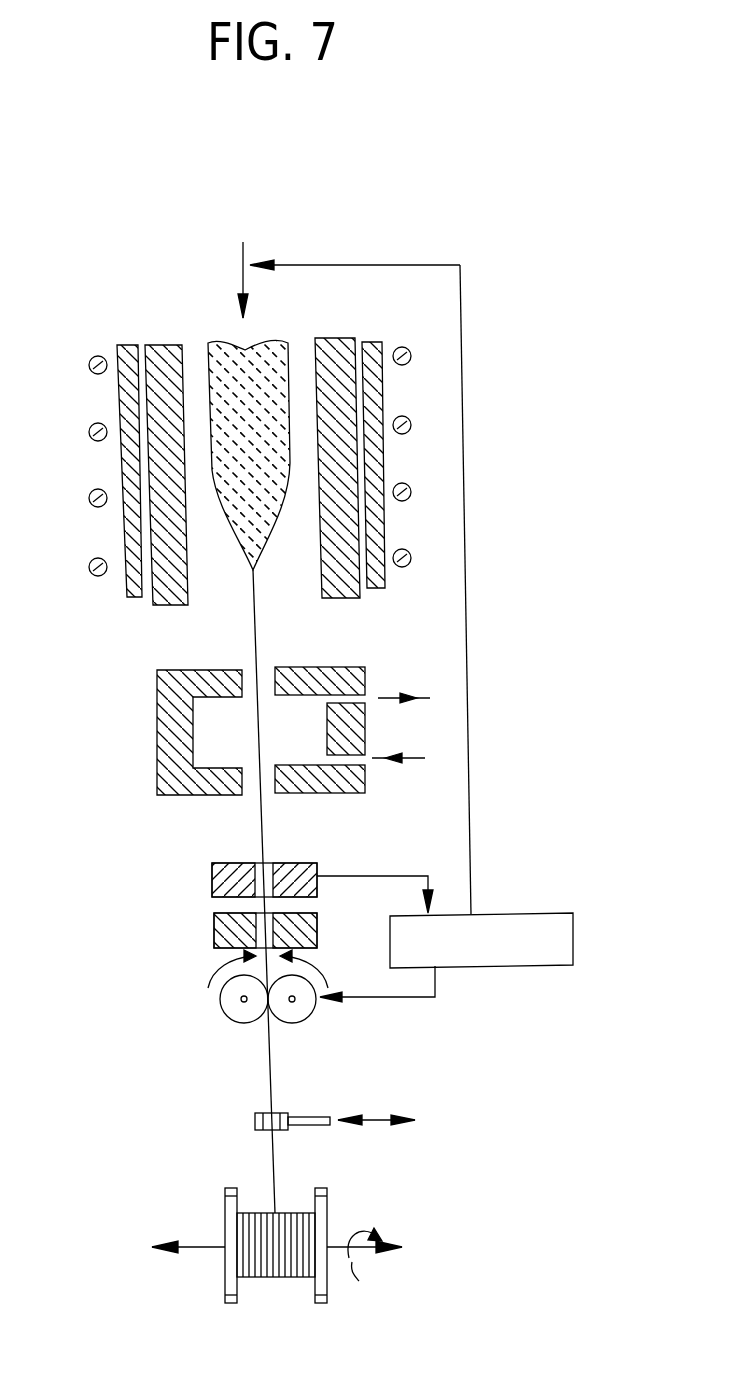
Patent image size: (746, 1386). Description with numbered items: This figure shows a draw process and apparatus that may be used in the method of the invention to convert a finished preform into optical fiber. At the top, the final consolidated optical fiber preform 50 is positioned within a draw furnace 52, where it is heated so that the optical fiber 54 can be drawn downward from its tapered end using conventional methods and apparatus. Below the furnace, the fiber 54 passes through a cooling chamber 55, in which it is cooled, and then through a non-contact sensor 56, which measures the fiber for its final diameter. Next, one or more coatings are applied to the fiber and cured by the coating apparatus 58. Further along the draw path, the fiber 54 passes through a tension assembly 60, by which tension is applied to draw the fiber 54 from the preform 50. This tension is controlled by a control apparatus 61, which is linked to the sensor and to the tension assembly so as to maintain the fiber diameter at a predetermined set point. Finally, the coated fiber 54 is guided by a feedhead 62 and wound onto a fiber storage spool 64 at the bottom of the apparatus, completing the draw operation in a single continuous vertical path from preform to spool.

The consolidated optical fiber preform 50 is at (260, 350).
The draw furnace 52 is at (124, 341).
The optical fiber 54 is at (263, 822).
The cooling chamber 55 is at (157, 712).
The non-contact sensor 56 is at (212, 868).
The coating apparatus 58 is at (214, 925).
The tension assembly 60 is at (216, 1004).
The control apparatus 61 is at (575, 938).
The feedhead 62 is at (255, 1118).
The fiber storage spool 64 is at (225, 1280).